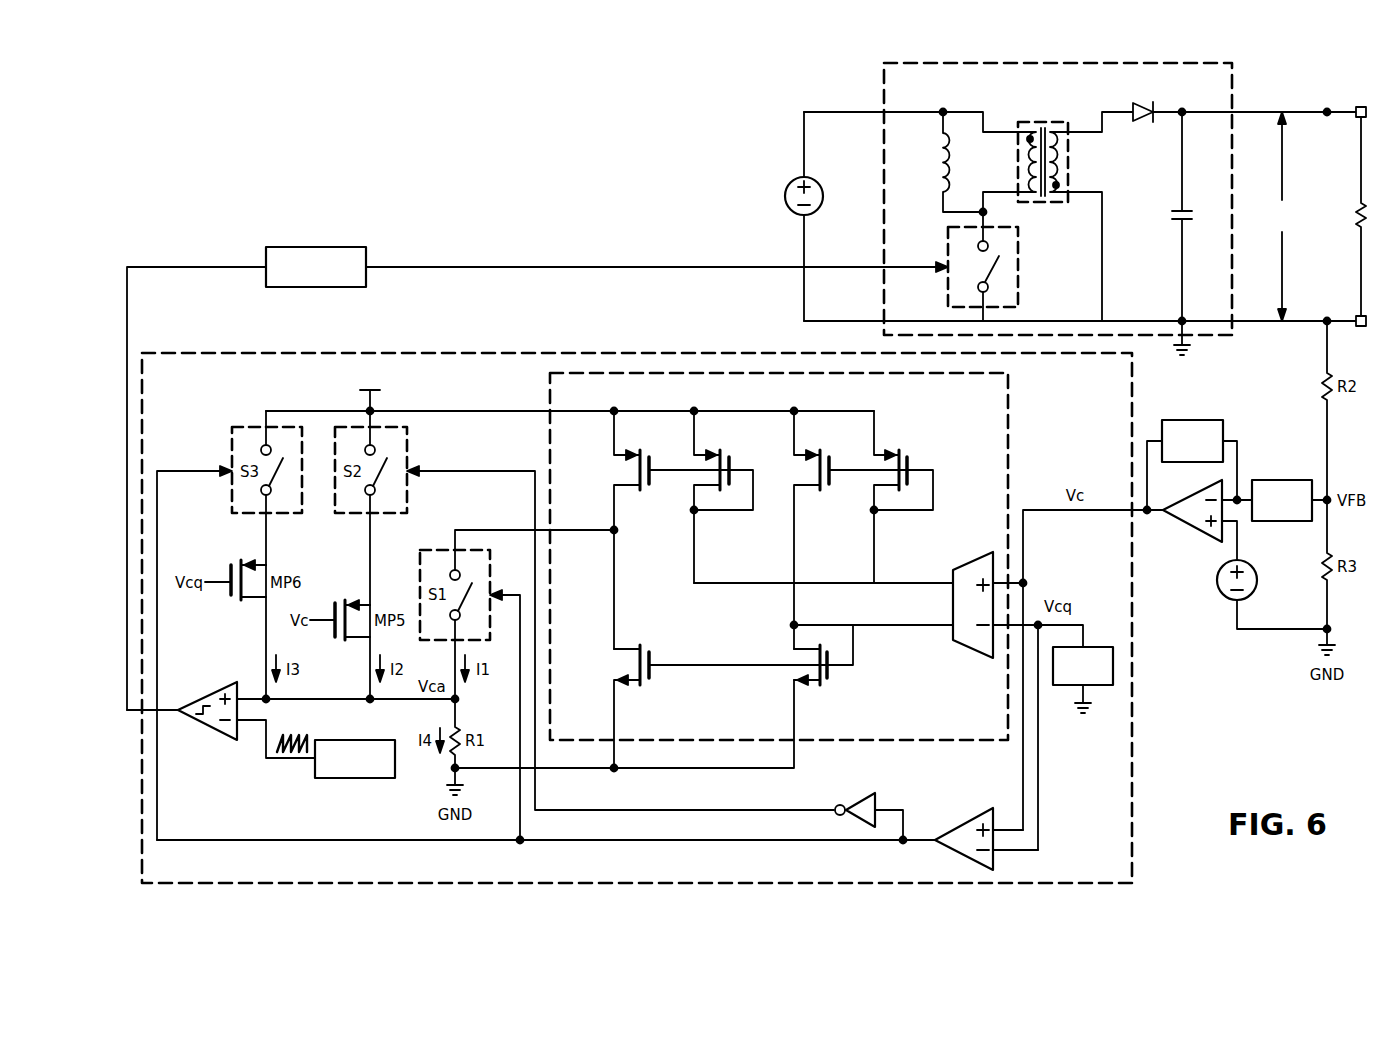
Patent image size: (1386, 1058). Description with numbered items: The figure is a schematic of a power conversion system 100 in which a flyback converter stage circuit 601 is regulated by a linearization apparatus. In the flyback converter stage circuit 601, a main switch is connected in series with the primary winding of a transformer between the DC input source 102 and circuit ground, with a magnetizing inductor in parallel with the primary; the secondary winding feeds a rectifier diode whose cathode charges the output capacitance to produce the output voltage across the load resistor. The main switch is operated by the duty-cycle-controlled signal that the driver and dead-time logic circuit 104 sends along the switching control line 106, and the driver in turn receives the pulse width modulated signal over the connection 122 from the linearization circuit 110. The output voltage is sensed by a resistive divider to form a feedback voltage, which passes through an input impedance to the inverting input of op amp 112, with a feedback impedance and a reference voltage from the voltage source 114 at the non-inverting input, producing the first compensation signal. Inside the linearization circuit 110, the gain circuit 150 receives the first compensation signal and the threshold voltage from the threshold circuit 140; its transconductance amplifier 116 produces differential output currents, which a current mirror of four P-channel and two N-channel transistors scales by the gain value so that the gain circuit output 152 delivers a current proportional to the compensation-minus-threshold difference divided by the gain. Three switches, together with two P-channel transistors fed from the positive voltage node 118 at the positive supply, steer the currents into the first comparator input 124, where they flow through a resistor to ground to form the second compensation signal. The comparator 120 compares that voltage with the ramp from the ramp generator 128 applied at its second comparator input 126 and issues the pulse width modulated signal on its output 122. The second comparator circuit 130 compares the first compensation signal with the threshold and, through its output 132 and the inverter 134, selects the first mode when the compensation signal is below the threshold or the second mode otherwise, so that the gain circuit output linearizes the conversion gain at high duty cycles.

The power conversion system 100 is at (441, 112).
The DC input source 102 is at (785, 195).
The driver and dead-time logic circuit 104 is at (317, 246).
The switching control line 106 is at (506, 266).
The linearization circuit 110 is at (171, 429).
The op amp 112 is at (1188, 527).
The voltage source 114 is at (1216, 582).
The transconductance amplifier 116 is at (977, 656).
The positive voltage node 118 is at (504, 410).
The comparator 120 is at (210, 727).
The comparator output 122 is at (178, 266).
The first comparator input 124 is at (347, 698).
The second comparator input 126 is at (297, 762).
The ramp generator 128 is at (359, 780).
The second comparator circuit 130 is at (962, 824).
The comparator output 132 is at (226, 839).
The inverter 134 is at (864, 795).
The threshold circuit 140 is at (1095, 646).
The gain circuit 150 is at (951, 443).
The gain circuit output 152 is at (506, 529).
The flyback converter stage circuit 601 is at (1240, 82).